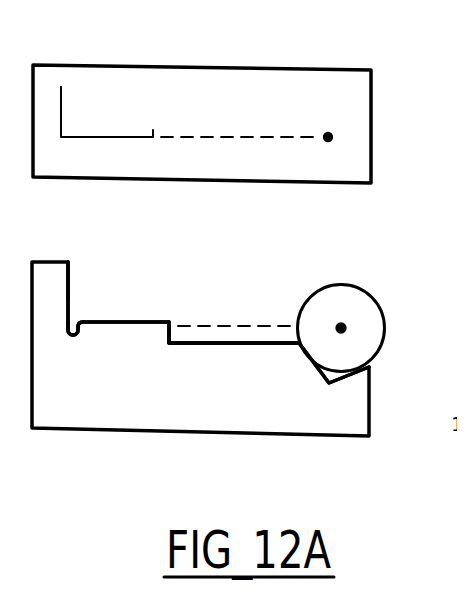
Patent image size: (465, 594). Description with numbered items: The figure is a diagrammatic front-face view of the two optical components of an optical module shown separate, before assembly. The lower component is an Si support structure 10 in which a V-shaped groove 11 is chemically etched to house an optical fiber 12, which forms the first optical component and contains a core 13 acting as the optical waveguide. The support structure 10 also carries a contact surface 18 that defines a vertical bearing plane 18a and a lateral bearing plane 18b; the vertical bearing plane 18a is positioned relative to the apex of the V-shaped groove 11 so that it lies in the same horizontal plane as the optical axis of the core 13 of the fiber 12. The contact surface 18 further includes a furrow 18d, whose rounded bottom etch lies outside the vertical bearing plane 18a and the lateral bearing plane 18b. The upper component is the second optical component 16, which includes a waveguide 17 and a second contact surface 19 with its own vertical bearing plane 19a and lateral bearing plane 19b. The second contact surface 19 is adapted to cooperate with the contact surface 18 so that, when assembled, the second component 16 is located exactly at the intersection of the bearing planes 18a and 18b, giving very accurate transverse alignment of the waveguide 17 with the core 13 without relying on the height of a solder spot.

The silicon substrate 10 is at (347, 431).
The V-shaped groove 11 is at (332, 374).
The optical fiber 12 is at (371, 326).
The core 13 is at (341, 325).
The second optical component 16 is at (370, 95).
The waveguide 17 is at (331, 137).
The contact surface 18 is at (120, 290).
The vertical bearing plane 18a is at (155, 322).
The lateral bearing plane 18b is at (68, 275).
The furrow 18d is at (78, 342).
The contact surface 19 is at (108, 110).
The vertical bearing plane 19a is at (152, 137).
The lateral bearing plane 19b is at (60, 100).